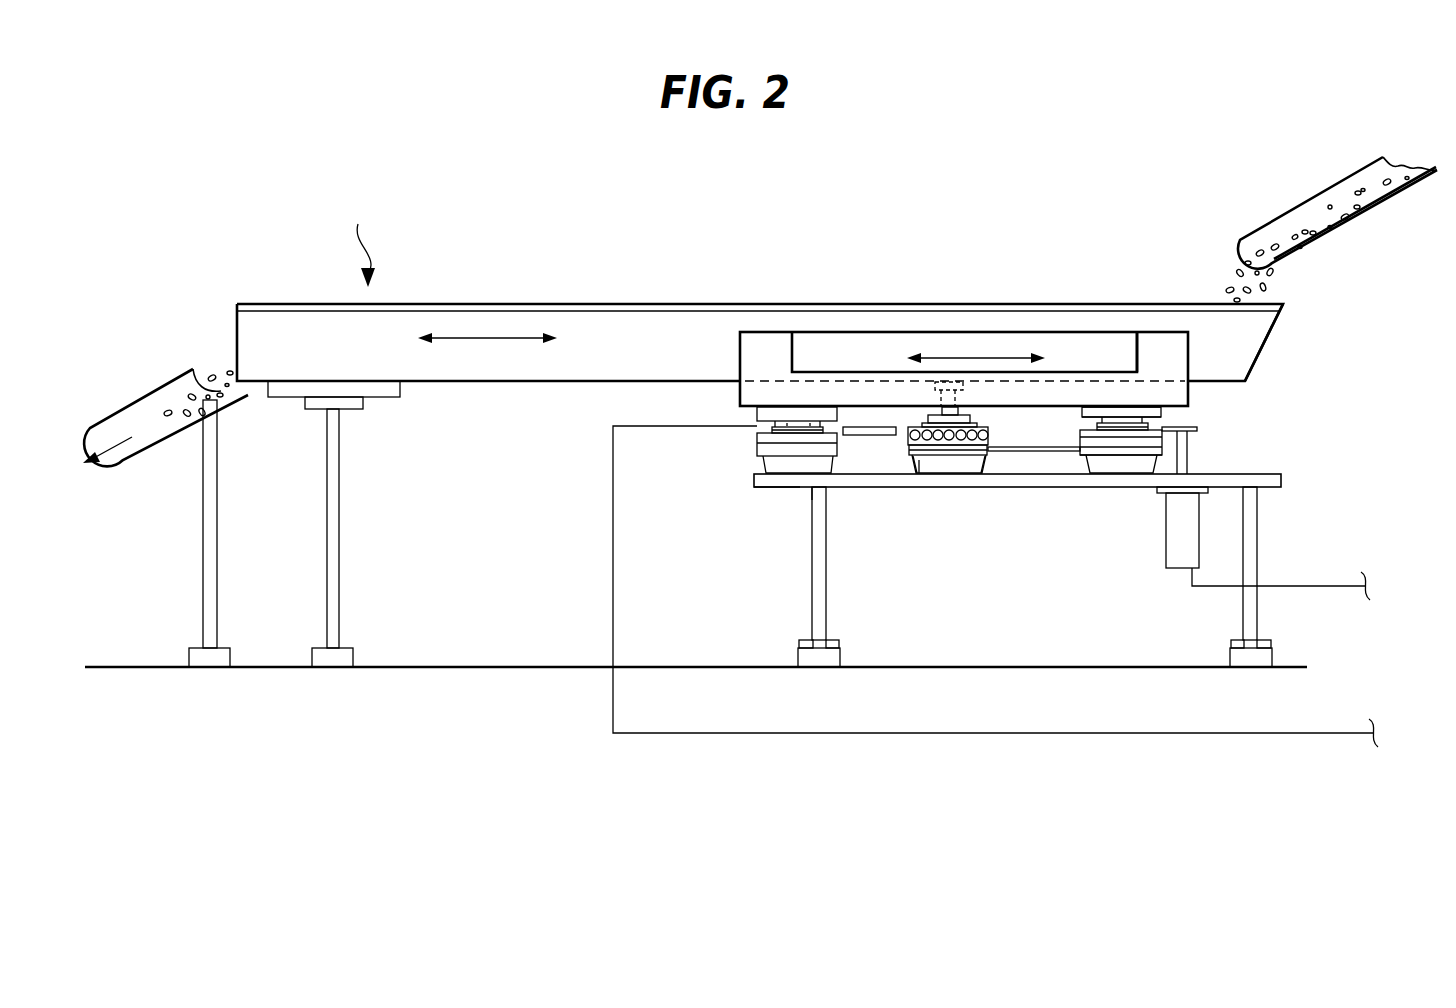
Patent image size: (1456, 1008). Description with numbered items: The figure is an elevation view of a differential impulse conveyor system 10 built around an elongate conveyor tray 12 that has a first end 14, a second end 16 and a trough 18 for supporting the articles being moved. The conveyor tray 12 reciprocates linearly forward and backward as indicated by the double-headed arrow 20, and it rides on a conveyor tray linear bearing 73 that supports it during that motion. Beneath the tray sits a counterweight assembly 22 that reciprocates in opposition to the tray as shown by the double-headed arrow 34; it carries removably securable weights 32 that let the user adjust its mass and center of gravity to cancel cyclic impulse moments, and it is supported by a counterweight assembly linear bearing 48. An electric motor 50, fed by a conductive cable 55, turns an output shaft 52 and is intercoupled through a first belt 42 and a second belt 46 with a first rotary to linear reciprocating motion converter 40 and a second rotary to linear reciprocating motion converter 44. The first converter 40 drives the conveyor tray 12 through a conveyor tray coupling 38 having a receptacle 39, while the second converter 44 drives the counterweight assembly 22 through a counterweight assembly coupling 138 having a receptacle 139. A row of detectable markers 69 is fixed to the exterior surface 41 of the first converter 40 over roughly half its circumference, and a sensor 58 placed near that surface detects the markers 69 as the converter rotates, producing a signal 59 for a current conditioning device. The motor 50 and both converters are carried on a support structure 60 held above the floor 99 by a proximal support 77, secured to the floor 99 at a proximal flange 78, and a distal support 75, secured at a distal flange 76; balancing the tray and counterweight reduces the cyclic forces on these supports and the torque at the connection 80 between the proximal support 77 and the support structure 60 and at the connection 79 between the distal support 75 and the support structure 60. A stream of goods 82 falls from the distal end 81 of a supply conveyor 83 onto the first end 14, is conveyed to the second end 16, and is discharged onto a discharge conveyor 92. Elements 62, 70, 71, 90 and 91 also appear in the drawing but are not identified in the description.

The differential impulse conveyor system 10 is at (598, 178).
The conveyor tray 12 is at (658, 335).
The first end 14 is at (1268, 342).
The second end 16 is at (301, 302).
The trough 18 is at (362, 238).
The double-headed arrow 20 is at (488, 338).
The counterweight assembly 22 is at (763, 345).
The weights 32 is at (826, 348).
The double-headed arrow 34 is at (982, 354).
The conveyor tray coupling 38 is at (965, 386).
The receptacle 39 is at (948, 383).
The first rotary to linear reciprocating motion converter 40 is at (960, 462).
The exterior surface 41 is at (940, 462).
The first belt 42 is at (1047, 452).
The second rotary to linear reciprocating motion converter 44 is at (1105, 462).
The second belt 46 is at (1182, 418).
The counterweight assembly linear bearing 48 is at (762, 465).
The electric motor 50 is at (1173, 532).
The output shaft 52 is at (1200, 433).
The conductive cable 55 is at (1313, 586).
The sensor 58 is at (855, 437).
The signal 59 is at (1320, 733).
The support structure 60 is at (797, 488).
The rear spring base 62 is at (1157, 492).
The detectable markers 69 is at (917, 462).
The tray support leg 70 is at (340, 568).
The tray support foot 71 is at (354, 655).
The conveyor tray linear bearing 73 is at (402, 388).
The distal support 75 is at (812, 588).
The distal flange 76 is at (798, 652).
The proximal support 77 is at (1243, 615).
The proximal flange 78 is at (1231, 658).
The connection 79 is at (812, 500).
The connection 80 is at (1262, 487).
The distal end 81 is at (1243, 240).
The stream of goods 82 is at (211, 372).
The supply conveyor 83 is at (1342, 177).
The discharge chute support foot 90 is at (231, 656).
The discharge chute support leg 91 is at (218, 568).
The discharge conveyor 92 is at (131, 457).
The floor 99 is at (505, 665).
The counterweight assembly coupling 138 is at (1114, 408).
The receptacle 139 is at (1128, 410).